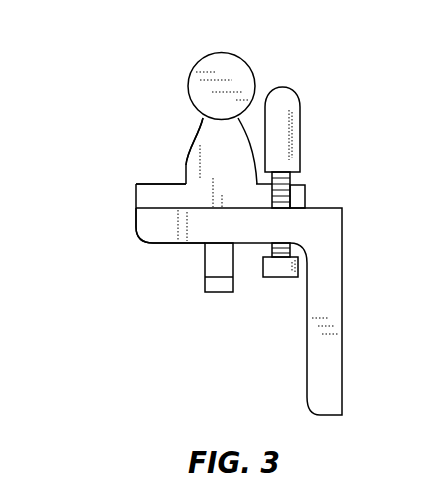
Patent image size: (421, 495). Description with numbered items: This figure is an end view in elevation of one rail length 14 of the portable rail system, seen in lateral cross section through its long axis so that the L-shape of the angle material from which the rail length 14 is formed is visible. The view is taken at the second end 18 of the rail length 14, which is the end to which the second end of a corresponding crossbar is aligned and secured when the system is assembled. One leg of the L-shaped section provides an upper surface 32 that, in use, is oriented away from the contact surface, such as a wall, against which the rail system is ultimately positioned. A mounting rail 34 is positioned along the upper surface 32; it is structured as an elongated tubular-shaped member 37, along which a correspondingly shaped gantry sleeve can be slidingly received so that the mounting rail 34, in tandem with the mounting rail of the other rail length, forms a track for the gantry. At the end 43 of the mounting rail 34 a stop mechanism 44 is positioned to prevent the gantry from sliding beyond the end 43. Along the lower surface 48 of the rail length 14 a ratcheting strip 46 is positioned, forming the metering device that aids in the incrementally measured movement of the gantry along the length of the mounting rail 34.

The rail length 14 is at (213, 227).
The second end 18 is at (147, 228).
The upper surface 32 is at (150, 203).
The mounting rail 34 is at (233, 165).
The elongated tubular-shaped member 37 is at (233, 57).
The end of mounting rail 43 is at (210, 135).
The stop mechanism 44 is at (283, 100).
The ratcheting strip 46 is at (223, 292).
The lower surface 48 is at (173, 243).